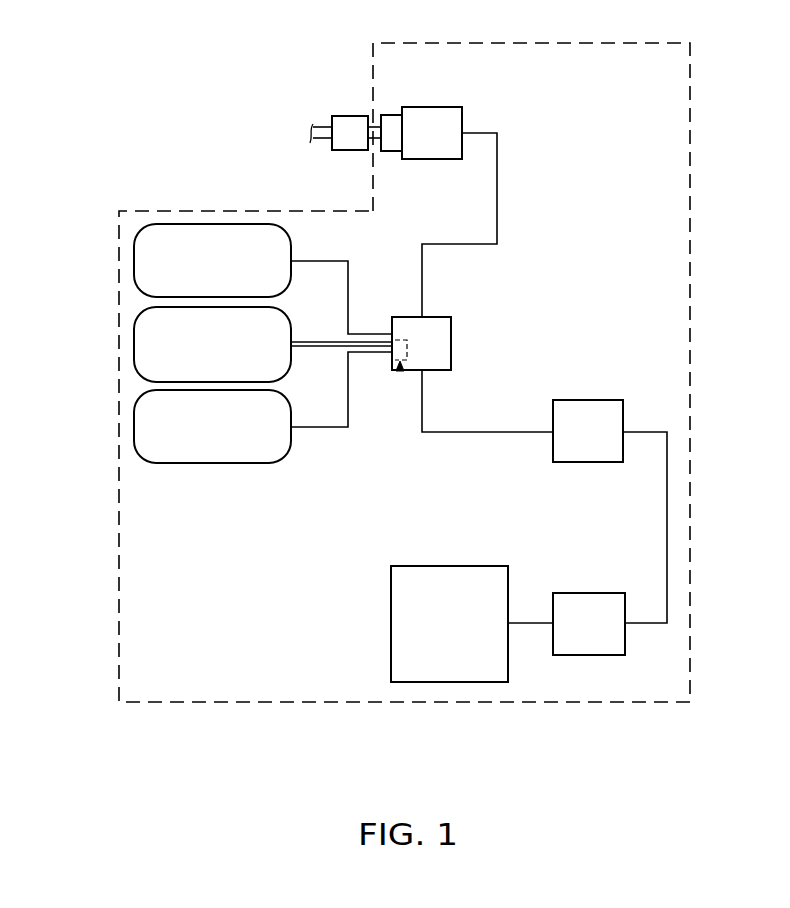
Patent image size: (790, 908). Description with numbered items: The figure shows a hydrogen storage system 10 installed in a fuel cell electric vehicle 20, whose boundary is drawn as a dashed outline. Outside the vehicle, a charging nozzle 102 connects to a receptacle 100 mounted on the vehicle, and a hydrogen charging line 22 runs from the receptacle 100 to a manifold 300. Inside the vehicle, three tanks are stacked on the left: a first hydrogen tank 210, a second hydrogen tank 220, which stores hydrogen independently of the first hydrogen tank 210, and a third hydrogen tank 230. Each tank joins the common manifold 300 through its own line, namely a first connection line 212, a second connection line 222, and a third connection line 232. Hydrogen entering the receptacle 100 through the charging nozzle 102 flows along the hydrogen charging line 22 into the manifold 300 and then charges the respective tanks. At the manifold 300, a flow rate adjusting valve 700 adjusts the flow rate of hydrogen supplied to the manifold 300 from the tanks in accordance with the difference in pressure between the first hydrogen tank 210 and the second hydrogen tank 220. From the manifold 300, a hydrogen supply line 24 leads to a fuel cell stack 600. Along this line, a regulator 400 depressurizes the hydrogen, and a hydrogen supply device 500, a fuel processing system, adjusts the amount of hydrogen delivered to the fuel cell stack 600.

The hydrogen storage system 10 is at (170, 48).
The fuel cell electric vehicle 20 is at (636, 43).
The hydrogen charging line 22 is at (497, 188).
The hydrogen supply line 24 is at (488, 433).
The receptacle 100 is at (430, 107).
The charging nozzle 102 is at (351, 116).
The first hydrogen tank 210 is at (134, 427).
The first connection line 212 is at (322, 428).
The second hydrogen tank 220 is at (134, 343).
The second connection line 222 is at (322, 346).
The third hydrogen tank 230 is at (134, 260).
The third connection line 232 is at (322, 262).
The manifold 300 is at (400, 317).
The regulator 400 is at (588, 400).
The hydrogen supply device (fuel processing system) 500 is at (588, 593).
The fuel cell stack 600 is at (448, 566).
The flow rate adjusting valve 700 is at (400, 371).